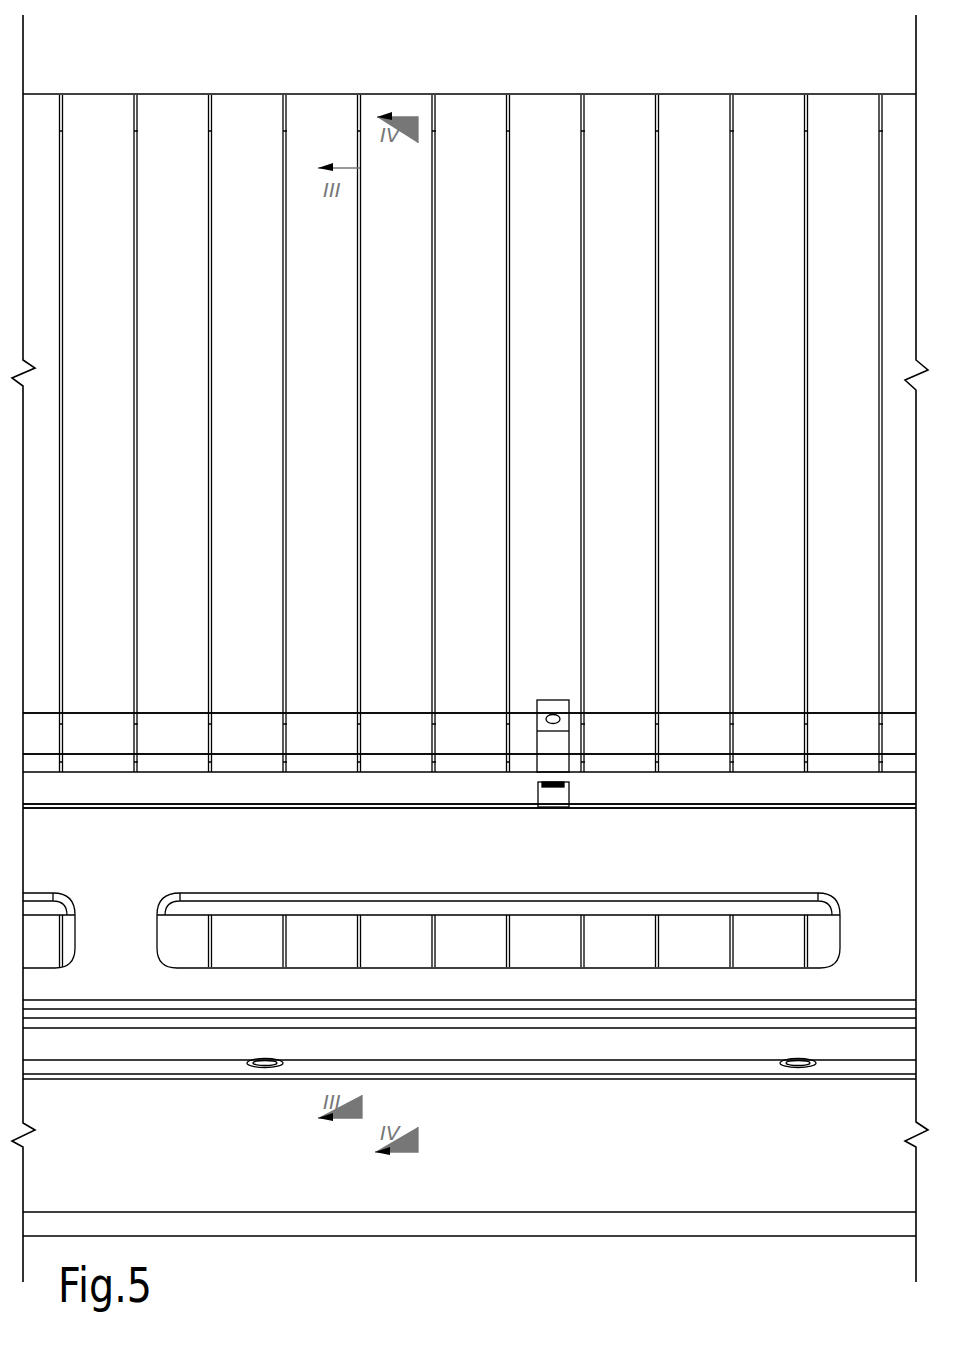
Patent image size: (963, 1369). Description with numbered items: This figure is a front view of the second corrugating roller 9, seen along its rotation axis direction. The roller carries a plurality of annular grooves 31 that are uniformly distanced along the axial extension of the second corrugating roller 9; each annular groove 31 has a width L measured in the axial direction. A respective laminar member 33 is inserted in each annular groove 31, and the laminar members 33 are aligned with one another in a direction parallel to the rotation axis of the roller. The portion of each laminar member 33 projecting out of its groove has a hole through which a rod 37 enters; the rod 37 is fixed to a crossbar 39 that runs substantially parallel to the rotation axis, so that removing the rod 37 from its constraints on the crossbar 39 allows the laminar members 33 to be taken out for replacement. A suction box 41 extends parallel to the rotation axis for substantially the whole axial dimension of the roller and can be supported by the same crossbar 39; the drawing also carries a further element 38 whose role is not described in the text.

The second corrugating roller 9 is at (325, 88).
The annular grooves 31 is at (287, 219).
The laminar members 33 is at (215, 578).
The width of the annular grooves L is at (563, 353).
The rod 37 is at (323, 730).
The locking element 38 is at (551, 706).
The crossbar 39 is at (469, 792).
The suction box 41 is at (748, 910).